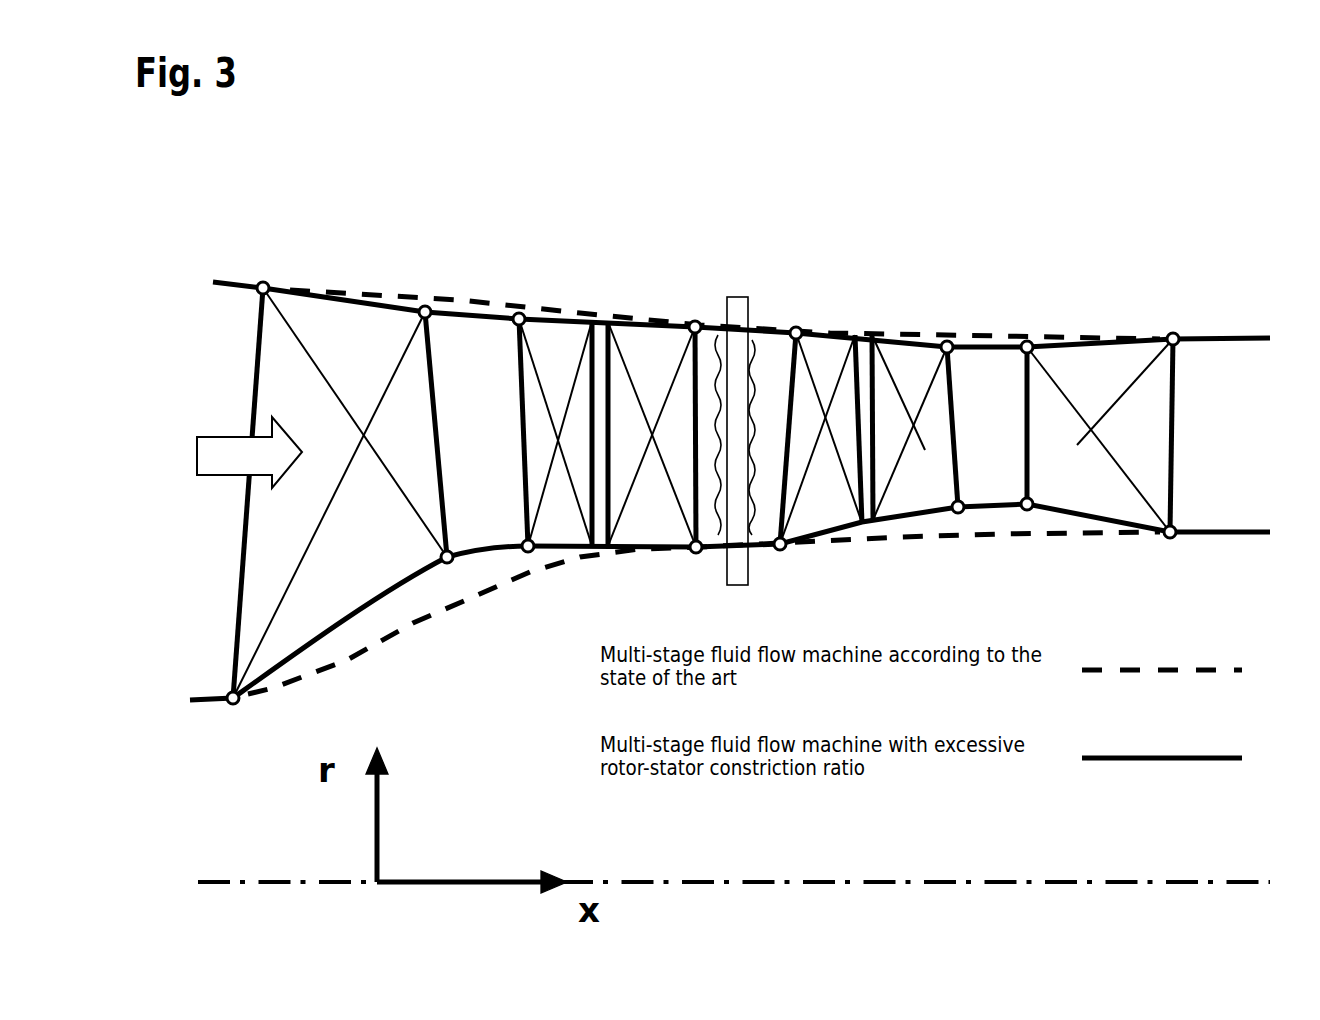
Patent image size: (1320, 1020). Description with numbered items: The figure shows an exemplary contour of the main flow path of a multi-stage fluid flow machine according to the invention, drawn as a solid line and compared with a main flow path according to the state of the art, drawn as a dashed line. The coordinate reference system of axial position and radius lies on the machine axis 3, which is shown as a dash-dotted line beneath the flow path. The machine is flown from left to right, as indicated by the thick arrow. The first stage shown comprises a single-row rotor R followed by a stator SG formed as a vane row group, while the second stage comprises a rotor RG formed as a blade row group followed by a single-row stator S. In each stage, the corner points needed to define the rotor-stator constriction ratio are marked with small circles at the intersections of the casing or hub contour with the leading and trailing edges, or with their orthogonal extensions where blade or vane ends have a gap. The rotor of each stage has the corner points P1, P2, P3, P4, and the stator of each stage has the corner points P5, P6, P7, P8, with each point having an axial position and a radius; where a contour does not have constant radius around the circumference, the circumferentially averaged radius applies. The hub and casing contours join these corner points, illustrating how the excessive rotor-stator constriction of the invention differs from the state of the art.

The machine axis 3 is at (890, 883).
The rotor R is at (322, 419).
The stator with vane row group SG is at (637, 373).
The rotor with blade row group RG is at (869, 365).
The single-row stator S is at (1100, 360).
The corner point P1 is at (513, 645).
The corner point P2 is at (538, 289).
The corner point P3 is at (673, 512).
The corner point P4 is at (680, 300).
The corner point P5 is at (775, 510).
The corner point P6 is at (783, 304).
The corner point P7 is at (927, 560).
The corner point P8 is at (929, 307).